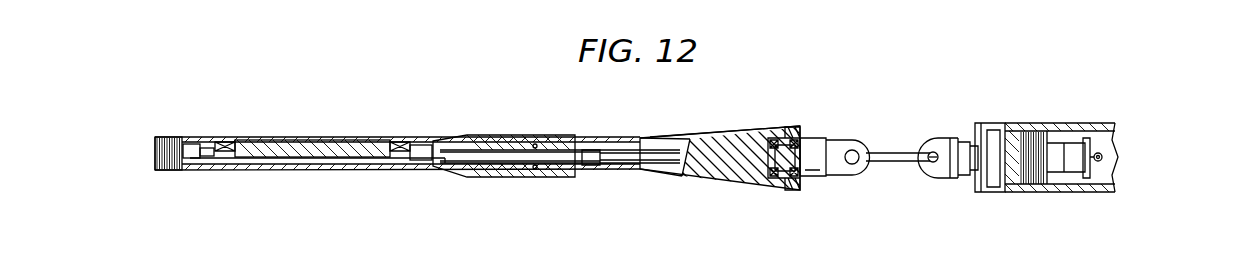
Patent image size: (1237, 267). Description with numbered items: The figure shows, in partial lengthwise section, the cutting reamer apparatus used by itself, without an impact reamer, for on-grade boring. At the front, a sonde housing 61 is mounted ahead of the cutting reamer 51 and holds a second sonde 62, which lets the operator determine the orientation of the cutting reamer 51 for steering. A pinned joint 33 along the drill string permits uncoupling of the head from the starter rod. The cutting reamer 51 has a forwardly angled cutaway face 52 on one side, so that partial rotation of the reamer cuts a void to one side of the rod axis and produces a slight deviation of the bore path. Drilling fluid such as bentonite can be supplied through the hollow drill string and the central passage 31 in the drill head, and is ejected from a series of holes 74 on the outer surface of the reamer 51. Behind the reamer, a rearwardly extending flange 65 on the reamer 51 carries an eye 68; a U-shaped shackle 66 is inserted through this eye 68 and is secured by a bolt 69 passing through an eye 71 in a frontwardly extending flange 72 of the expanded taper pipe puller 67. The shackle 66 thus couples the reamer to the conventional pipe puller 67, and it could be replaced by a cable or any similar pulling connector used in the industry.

The air passage 31 is at (390, 168).
The pinned joint 33 is at (528, 137).
The cutting reamer 51 is at (738, 173).
The forwardly angled cutaway face 52 is at (728, 135).
The sonde housing 61 is at (305, 173).
The second sonde 62 is at (312, 143).
The rearwardly extending flange 65 is at (835, 140).
The U-shaped shackle 66 is at (890, 152).
The expanded taper pipe puller 67 is at (1015, 140).
The eye 68 is at (847, 177).
The bolt 69 is at (933, 163).
The eye 71 is at (948, 152).
The frontwardly extending flange 72 is at (967, 170).
The holes 74 is at (687, 170).